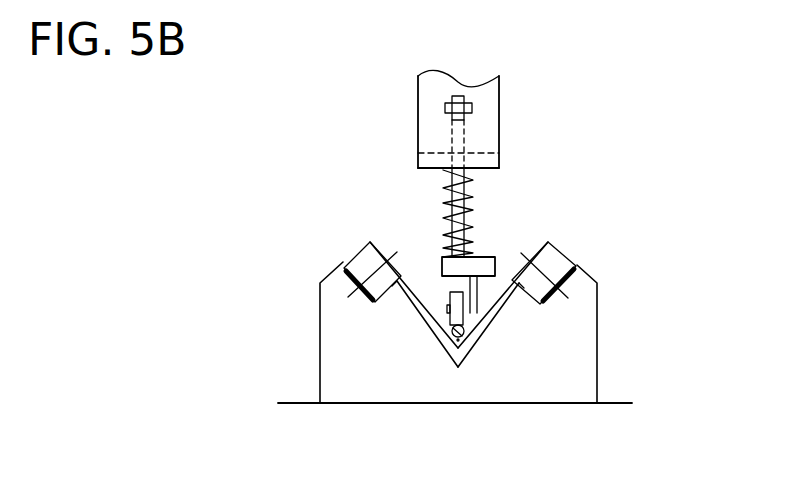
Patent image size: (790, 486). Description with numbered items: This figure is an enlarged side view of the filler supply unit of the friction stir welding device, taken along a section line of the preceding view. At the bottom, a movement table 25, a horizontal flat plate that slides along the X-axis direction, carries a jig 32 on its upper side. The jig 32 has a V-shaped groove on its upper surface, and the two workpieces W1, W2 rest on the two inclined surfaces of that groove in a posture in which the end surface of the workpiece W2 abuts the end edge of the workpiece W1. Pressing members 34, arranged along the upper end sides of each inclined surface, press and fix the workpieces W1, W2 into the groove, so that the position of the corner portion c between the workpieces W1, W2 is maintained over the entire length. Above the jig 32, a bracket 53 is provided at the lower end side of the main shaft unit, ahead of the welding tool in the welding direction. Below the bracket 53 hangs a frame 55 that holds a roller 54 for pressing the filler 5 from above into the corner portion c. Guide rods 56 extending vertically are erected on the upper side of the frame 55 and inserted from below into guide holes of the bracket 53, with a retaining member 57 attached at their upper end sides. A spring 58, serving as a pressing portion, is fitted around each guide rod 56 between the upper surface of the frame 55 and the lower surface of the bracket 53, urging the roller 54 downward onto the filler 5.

The filler 5 is at (466, 334).
The movement table 25 is at (302, 403).
The jig 32 is at (587, 371).
The pressing member 34 is at (357, 255).
The bracket 53 is at (500, 113).
The roller 54 is at (452, 293).
The frame 55 is at (496, 257).
The guide rod 56 is at (475, 197).
The retaining member 57 is at (445, 108).
The spring 58 is at (443, 199).
The workpiece W1 is at (412, 313).
The workpiece W2 is at (507, 312).
The corner portion c is at (456, 341).